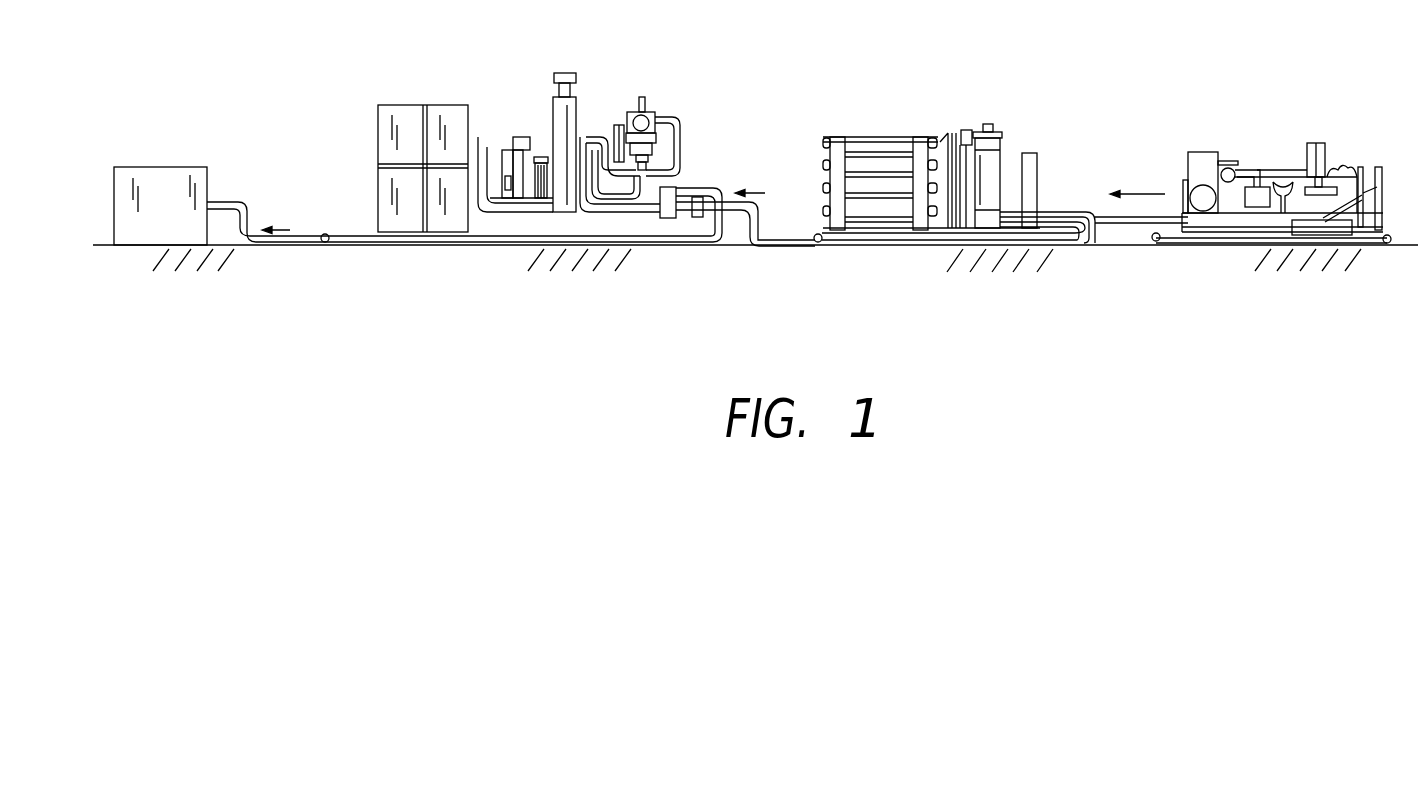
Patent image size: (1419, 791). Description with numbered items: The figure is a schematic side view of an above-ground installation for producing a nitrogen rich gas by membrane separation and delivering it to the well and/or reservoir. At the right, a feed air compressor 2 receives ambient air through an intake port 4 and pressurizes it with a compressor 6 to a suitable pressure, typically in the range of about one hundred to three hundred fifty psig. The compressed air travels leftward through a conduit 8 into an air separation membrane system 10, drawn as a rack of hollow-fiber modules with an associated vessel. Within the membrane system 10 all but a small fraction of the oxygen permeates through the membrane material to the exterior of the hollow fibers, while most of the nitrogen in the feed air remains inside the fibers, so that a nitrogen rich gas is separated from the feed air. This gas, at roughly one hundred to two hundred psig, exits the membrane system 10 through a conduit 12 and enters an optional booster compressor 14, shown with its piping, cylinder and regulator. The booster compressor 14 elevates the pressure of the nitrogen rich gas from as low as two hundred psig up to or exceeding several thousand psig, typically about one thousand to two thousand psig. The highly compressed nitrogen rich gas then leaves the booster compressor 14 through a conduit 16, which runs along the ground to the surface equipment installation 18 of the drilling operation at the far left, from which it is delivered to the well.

The feed air compressor 2 is at (1271, 160).
The intake port 4 is at (1230, 148).
The compressor 6 is at (1200, 151).
The conduit 8 is at (1105, 223).
The air separation membrane system 10 is at (962, 112).
The conduit 12 is at (760, 248).
The booster compressor 14 is at (596, 101).
The conduit 16 is at (300, 227).
The surface equipment installation 18 is at (181, 221).